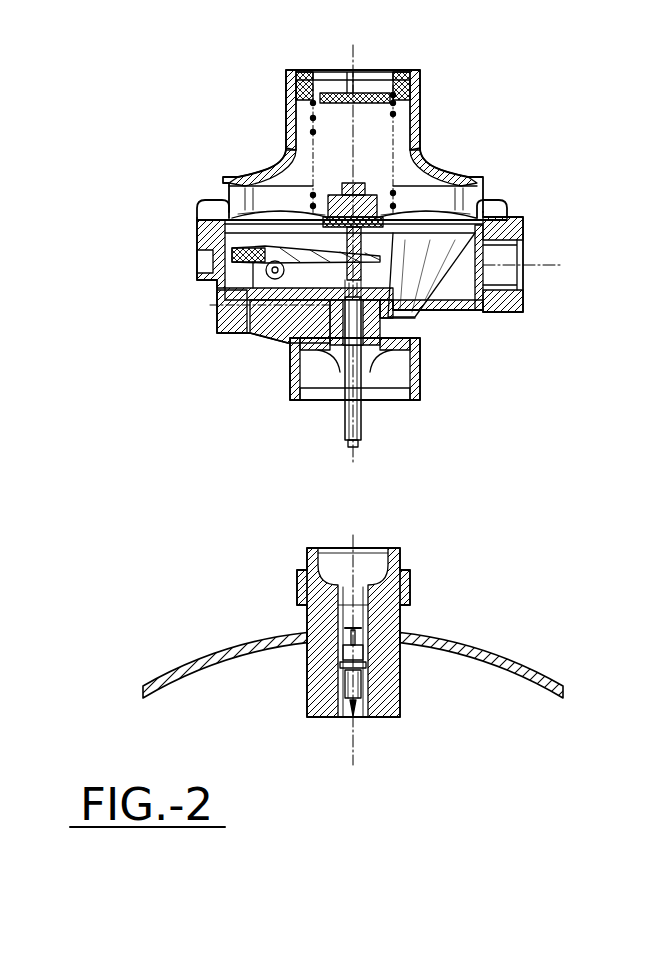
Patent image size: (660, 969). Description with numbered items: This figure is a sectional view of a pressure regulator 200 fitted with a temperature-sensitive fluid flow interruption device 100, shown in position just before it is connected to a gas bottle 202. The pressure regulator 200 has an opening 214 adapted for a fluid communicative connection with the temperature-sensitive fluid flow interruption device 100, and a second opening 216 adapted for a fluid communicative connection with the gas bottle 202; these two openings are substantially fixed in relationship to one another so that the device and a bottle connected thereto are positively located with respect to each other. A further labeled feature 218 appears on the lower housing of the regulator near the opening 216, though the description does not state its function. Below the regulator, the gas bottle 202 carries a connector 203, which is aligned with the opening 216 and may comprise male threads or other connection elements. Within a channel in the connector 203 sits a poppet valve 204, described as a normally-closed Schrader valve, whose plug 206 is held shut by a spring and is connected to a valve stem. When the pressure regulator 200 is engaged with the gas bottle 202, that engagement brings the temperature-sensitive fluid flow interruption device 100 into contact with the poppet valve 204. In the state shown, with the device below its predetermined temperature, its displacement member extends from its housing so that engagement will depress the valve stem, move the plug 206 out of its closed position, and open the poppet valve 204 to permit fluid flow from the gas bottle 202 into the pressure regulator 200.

The pressure regulator 200 is at (493, 182).
The opening 214 is at (392, 318).
The lower housing 218 is at (313, 350).
The opening 216 is at (323, 397).
The temperature-sensitive fluid flow interruption device 100 is at (373, 395).
The connector 203 is at (293, 580).
The poppet valve 204 is at (375, 676).
The plug 206 is at (362, 728).
The gas bottle 202 is at (532, 668).